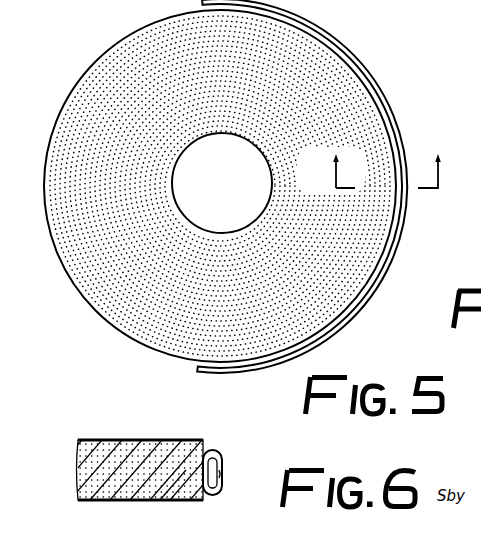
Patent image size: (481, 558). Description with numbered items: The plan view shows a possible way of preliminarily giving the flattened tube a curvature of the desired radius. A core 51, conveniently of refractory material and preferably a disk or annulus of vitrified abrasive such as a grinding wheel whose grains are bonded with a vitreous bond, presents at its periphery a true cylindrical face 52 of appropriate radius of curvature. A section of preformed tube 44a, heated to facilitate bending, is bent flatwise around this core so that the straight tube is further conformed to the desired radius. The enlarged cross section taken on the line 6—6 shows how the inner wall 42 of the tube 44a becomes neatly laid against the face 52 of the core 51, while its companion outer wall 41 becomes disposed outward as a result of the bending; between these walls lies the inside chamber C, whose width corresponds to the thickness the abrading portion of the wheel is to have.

In FIG. 5, the core 51 is at (125, 58).
In FIG. 6, the core 51 is at (148, 453).
In FIG. 5, the cylindrical face 52 is at (163, 15).
In FIG. 6, the cylindrical face 52 is at (203, 442).
In FIG. 5, the preformed tube 44a is at (370, 68).
In FIG. 6, the preformed tube 44a is at (227, 455).
In FIG. 6, the outer wall 41 is at (220, 470).
In FIG. 6, the inner wall 42 is at (172, 488).
In FIG. 6, the chamber C is at (222, 485).
In FIG. 5, the section line 6— 6 is at (383, 172).